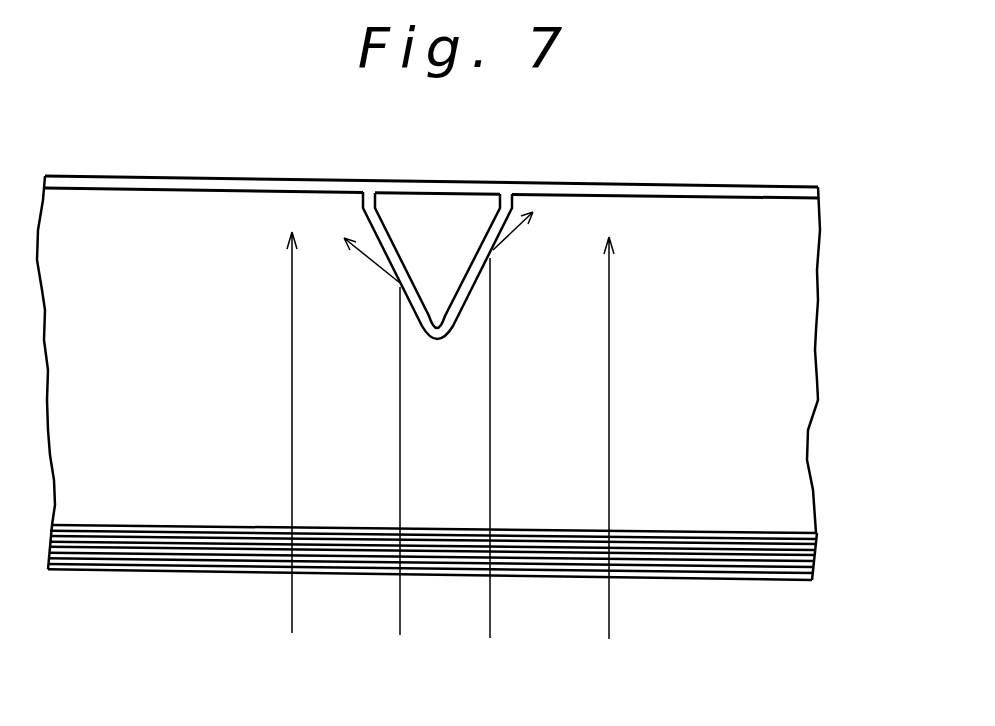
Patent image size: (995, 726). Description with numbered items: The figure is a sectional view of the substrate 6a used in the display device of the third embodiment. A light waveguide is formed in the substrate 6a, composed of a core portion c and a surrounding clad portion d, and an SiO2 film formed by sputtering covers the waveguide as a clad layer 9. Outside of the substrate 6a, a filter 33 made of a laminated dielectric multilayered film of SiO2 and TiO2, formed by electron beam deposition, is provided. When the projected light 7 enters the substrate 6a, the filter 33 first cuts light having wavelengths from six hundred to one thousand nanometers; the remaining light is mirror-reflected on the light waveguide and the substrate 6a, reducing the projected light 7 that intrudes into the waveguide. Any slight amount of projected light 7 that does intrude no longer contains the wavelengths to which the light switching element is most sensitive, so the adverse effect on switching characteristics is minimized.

The substrate 6a is at (798, 348).
The clad layer 9 is at (615, 194).
The core portion c is at (427, 213).
The clad portion d is at (458, 308).
The filter 33 is at (729, 568).
The projected light 7 is at (273, 642).